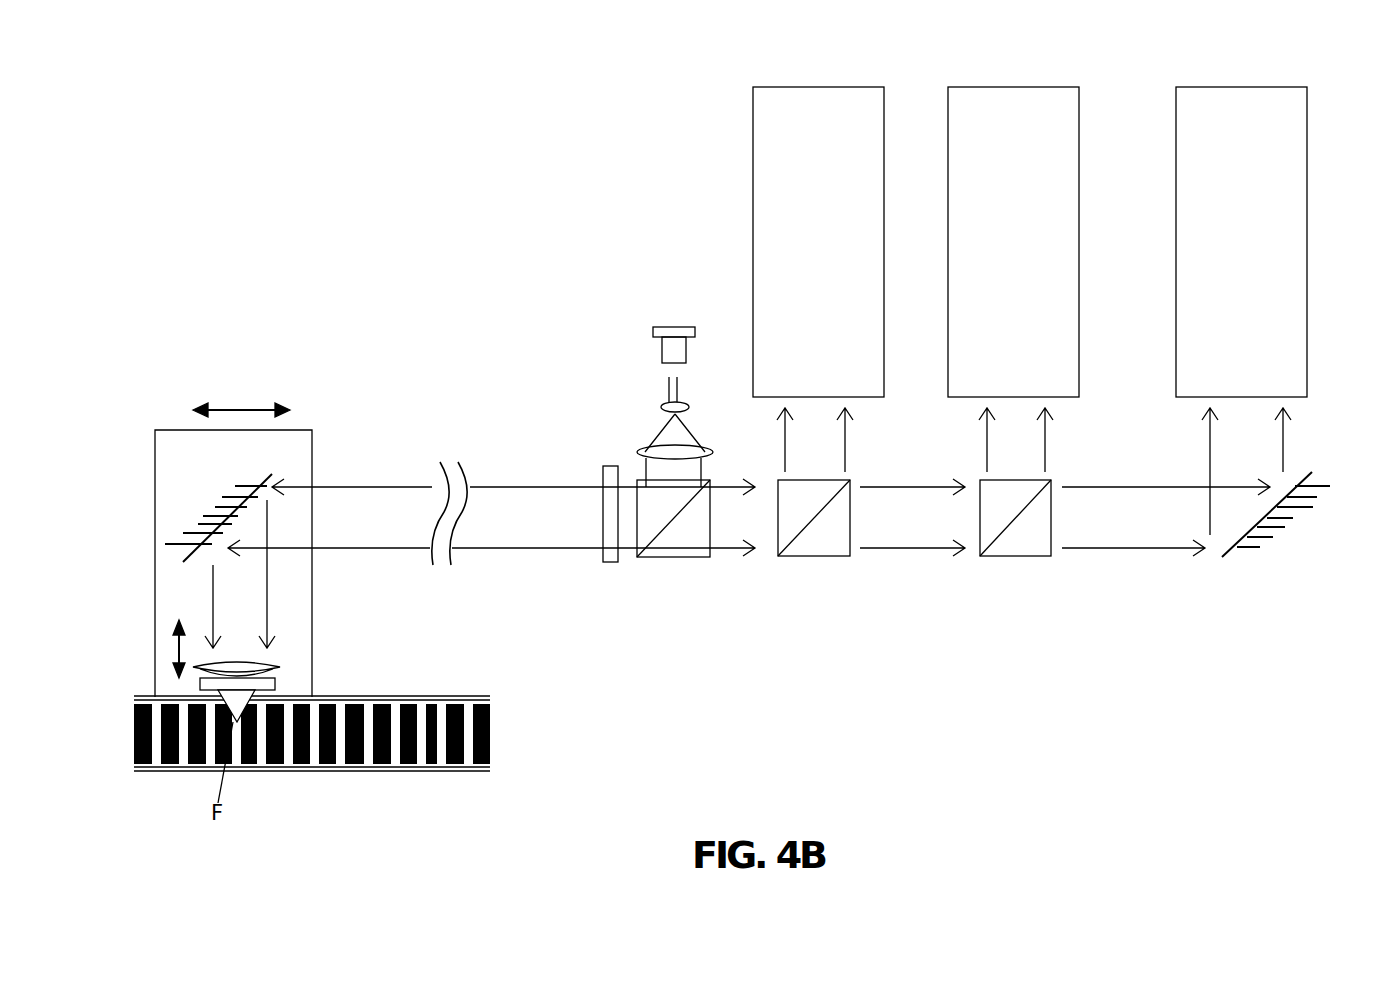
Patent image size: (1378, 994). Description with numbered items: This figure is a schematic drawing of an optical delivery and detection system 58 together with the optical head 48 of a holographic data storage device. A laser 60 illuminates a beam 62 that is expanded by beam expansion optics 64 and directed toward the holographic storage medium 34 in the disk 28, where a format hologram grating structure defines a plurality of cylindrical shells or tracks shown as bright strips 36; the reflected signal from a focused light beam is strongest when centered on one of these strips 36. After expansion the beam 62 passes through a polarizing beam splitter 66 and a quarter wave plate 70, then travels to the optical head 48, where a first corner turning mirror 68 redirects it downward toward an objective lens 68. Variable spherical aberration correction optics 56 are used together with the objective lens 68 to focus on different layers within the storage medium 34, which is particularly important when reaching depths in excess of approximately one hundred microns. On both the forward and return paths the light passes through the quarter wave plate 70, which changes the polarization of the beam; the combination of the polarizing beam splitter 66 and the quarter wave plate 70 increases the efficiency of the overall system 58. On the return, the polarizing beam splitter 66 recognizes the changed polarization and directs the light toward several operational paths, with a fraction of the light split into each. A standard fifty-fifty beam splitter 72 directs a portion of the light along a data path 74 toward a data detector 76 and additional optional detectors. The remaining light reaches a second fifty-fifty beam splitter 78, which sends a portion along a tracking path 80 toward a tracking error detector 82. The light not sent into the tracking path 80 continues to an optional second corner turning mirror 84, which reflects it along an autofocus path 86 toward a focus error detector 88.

The optical data storage device 28 is at (503, 777).
The optical recording medium 34 is at (333, 754).
The tracks 36 is at (237, 764).
The optical head 48 is at (313, 457).
The variable spherical aberration correction optics 56 is at (276, 684).
The optical delivery and detection system 58 is at (483, 279).
The laser 60 is at (670, 327).
The beam 62 is at (684, 390).
The beam expansion optics 64 is at (662, 404).
The polarizing beam splitter 66 is at (665, 558).
The first corner turning mirror and objective lens 68 is at (210, 512).
The quarter wave plate 70 is at (610, 563).
The 50/50 beam splitter 72 is at (808, 557).
The data path 74 is at (825, 461).
The data detector 76 is at (828, 86).
The second 50/50 beam splitter 78 is at (1010, 557).
The tracking path 80 is at (1025, 461).
The tracking error detector 82 is at (1022, 86).
The second corner turning mirror 84 is at (1285, 520).
The autofocus path 86 is at (1255, 457).
The focus error detector 88 is at (1250, 86).